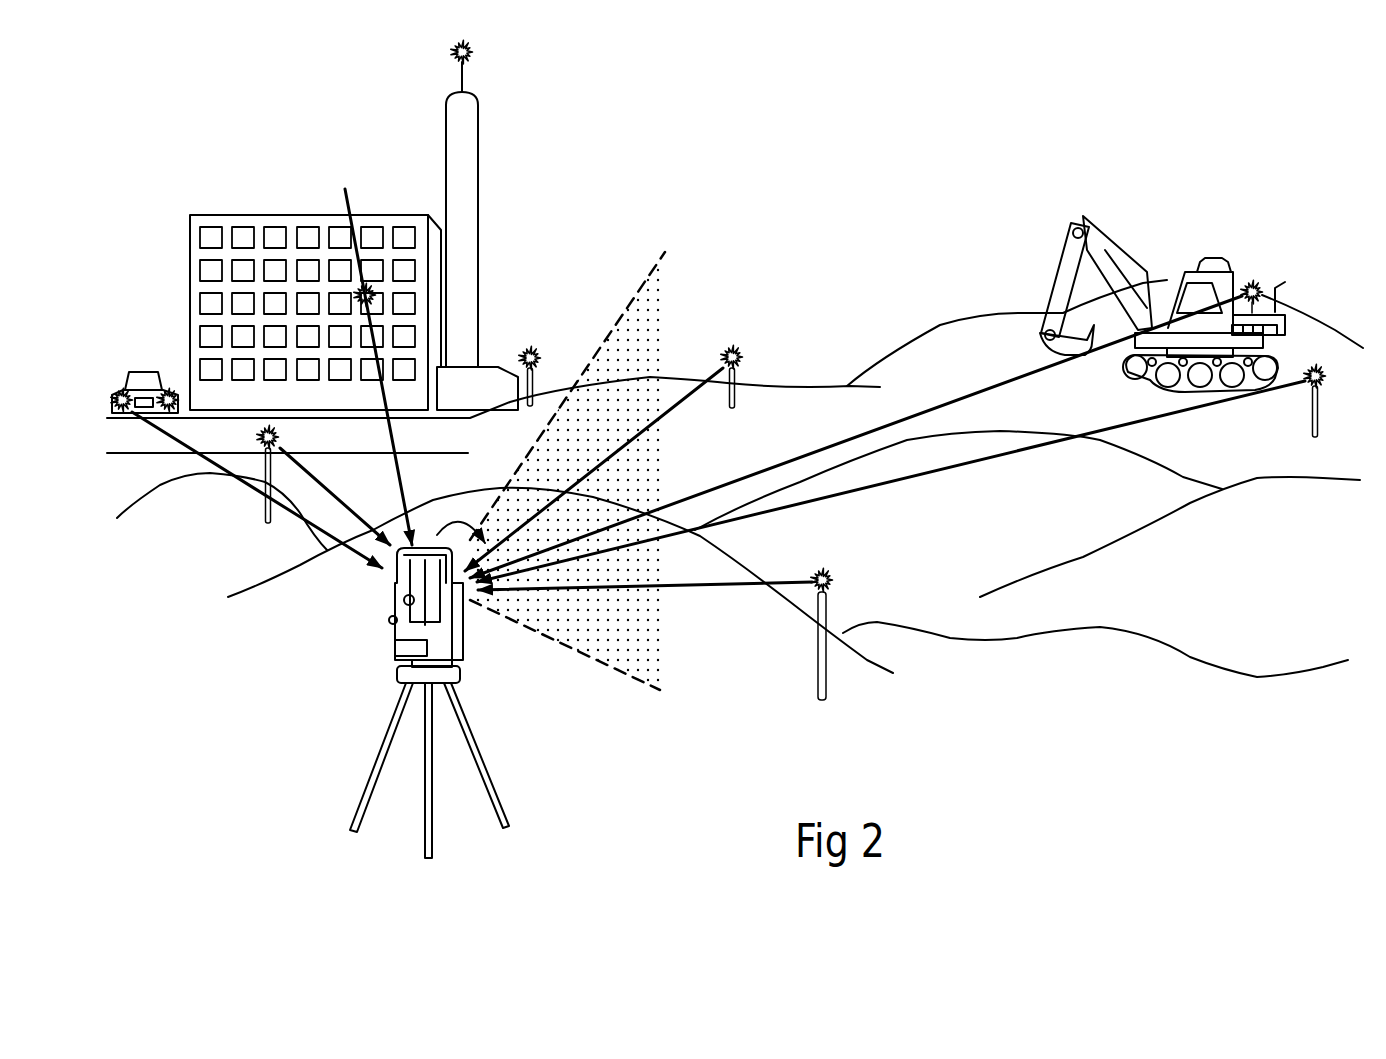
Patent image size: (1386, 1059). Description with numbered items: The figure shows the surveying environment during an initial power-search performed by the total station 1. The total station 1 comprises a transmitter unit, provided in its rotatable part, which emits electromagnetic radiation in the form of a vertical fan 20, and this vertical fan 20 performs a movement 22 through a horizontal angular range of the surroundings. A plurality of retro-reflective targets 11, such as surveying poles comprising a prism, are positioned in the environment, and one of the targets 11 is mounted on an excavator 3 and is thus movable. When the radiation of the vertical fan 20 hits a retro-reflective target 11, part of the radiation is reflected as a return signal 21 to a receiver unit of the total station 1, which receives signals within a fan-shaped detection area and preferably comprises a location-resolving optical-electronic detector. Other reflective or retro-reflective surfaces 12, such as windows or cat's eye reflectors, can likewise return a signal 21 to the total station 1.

The total station 1 is at (367, 648).
The excavator 3 is at (1055, 205).
The retro-reflective target 11 is at (280, 437).
The reflective or retro-reflective surface 12 is at (455, 62).
The vertical fan 20 is at (643, 312).
The return signal 21 is at (212, 465).
The movement 22 is at (461, 522).